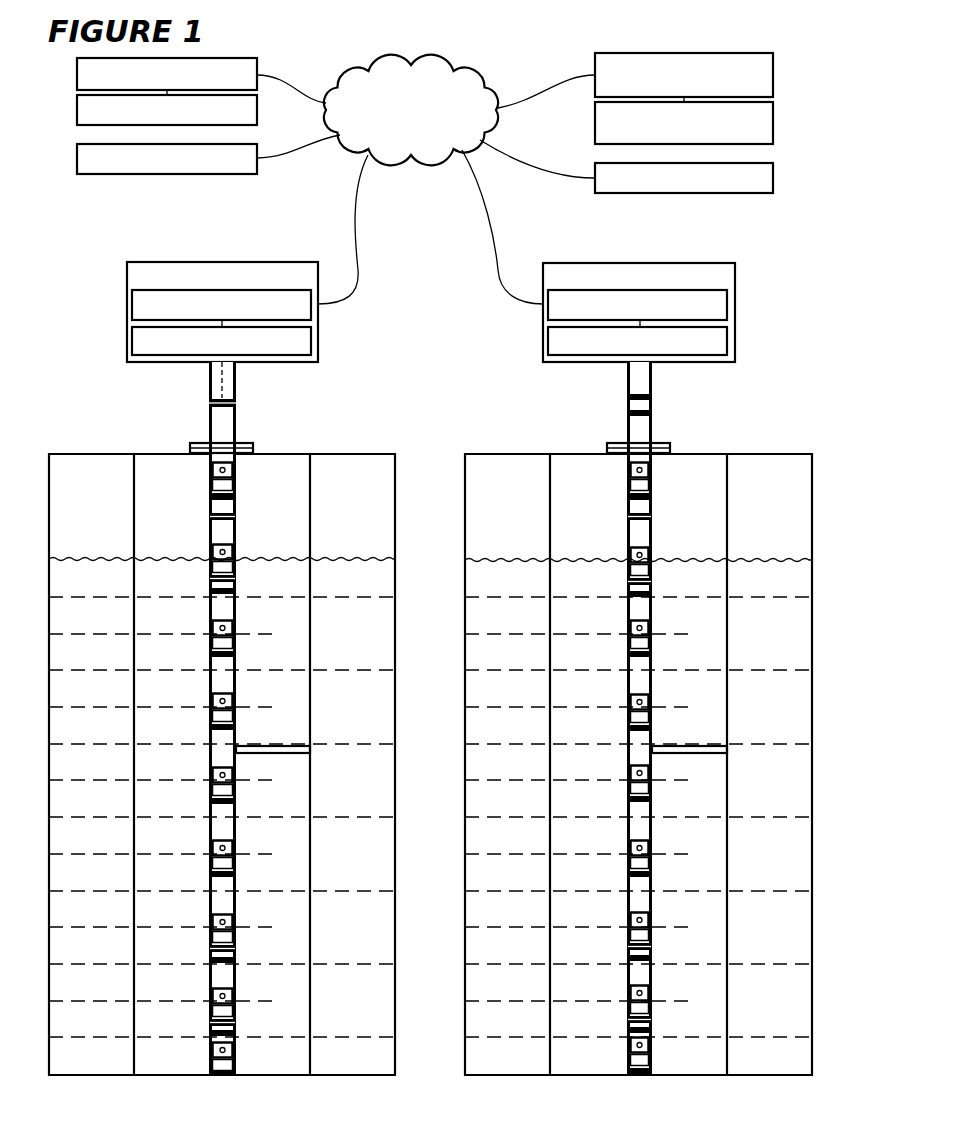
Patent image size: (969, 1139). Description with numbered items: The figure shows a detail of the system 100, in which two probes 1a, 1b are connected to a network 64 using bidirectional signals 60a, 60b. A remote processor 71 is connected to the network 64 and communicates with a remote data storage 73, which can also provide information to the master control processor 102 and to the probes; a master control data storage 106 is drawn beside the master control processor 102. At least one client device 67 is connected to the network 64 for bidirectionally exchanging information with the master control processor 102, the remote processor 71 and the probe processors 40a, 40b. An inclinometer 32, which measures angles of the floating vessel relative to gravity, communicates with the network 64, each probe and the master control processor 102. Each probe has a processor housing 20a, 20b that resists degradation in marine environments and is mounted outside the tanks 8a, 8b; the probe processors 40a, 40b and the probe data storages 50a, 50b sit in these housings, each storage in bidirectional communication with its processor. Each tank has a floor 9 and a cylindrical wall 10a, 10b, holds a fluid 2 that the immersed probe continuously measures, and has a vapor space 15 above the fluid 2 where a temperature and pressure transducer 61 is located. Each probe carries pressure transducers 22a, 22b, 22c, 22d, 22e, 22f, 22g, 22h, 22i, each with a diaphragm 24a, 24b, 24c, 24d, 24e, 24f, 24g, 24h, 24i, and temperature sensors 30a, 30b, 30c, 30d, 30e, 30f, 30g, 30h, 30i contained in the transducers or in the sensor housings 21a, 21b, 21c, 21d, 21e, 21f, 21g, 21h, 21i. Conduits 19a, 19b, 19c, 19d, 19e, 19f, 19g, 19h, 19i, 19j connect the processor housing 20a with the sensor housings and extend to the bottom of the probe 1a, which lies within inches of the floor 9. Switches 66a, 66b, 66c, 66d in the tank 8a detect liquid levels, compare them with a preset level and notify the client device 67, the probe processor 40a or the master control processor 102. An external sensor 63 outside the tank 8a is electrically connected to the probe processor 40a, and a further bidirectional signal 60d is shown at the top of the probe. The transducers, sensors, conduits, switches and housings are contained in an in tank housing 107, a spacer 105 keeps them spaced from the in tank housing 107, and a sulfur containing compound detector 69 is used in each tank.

The system 100 is at (752, 30).
The remote processor 71 is at (77, 78).
The remote data storage 73 is at (77, 113).
The client device 67 is at (77, 162).
The network 64 is at (474, 78).
The master control processor 102 is at (773, 81).
The master control data storage 106 is at (773, 127).
The inclinometer 32 is at (773, 185).
The bidirectional signal 60a is at (350, 193).
The bidirectional signal 60b is at (495, 215).
The bidirectional signal 60d is at (214, 378).
The probe 1a is at (251, 646).
The probe 1b is at (610, 644).
The processor housing 20a is at (126, 279).
The processor housing 20b is at (731, 281).
The probe processor 40a is at (126, 308).
The probe processor 40b is at (731, 310).
The probe data storage 50a is at (126, 342).
The probe data storage 50b is at (731, 344).
The tank 8a is at (292, 720).
The tank 8b is at (470, 424).
The wall 10a is at (393, 482).
The wall 10b is at (468, 498).
The conduit 19a is at (236, 378).
The conduit 19b is at (236, 435).
The conduit 19c is at (237, 539).
The conduit 19d is at (236, 608).
The conduit 19e is at (236, 672).
The conduit 19f is at (236, 746).
The conduit 19g is at (236, 819).
The probe segment 19h is at (236, 893).
The probe segment 19i is at (236, 967).
The probe segment 19j is at (237, 1036).
The external sensor 63 is at (209, 411).
The temperature and pressure transducer 61 is at (209, 500).
The switch 66a is at (210, 517).
The switch 66b is at (210, 585).
The switch 66c is at (210, 1026).
The switch 66d is at (210, 953).
The pressure transducer 22a is at (210, 473).
The pressure transducer 22b is at (210, 555).
The pressure transducer 22c is at (210, 631).
The pressure transducer 22d is at (210, 704).
The pressure transducer 22e is at (210, 778).
The pressure transducer 22f is at (210, 851).
The pressure transducer 22g is at (210, 925).
The pressure transducer 22h is at (210, 999).
The pressure transducer 22i is at (211, 1052).
The diaphragm 24a is at (233, 465).
The diaphragm 24b is at (233, 547).
The diaphragm 24c is at (233, 623).
The diaphragm 24d is at (233, 696).
The diaphragm 24e is at (233, 770).
The diaphragm 24f is at (233, 843).
The diaphragm 24g is at (233, 917).
The diaphragm 24h is at (233, 991).
The diaphragm 24i is at (231, 1047).
The sensor housing 21a is at (236, 482).
The sensor housing 21b is at (236, 566).
The sensor housing 21c is at (236, 641).
The sensor housing 21d is at (236, 714).
The sensor housing 21e is at (236, 788).
The sensor housing 21f is at (236, 861).
The sensor housing 21g is at (236, 934).
The sensor housing 21h is at (236, 1008).
The sensor housing 21i is at (237, 1052).
The temperature sensor 30a is at (212, 486).
The temperature sensor 30b is at (212, 569).
The temperature sensor 30c is at (212, 644).
The temperature sensor 30d is at (212, 717).
The temperature sensor 30e is at (212, 791).
The temperature sensor 30f is at (212, 864).
The temperature sensor 30g is at (212, 937).
The temperature sensor 30h is at (212, 1011).
The temperature sensor 30i is at (211, 1065).
The vapor space 15 is at (355, 505).
The fluid 2 is at (378, 559).
The in tank housing 107 is at (314, 628).
The spacer 105 is at (292, 755).
The floor 9 is at (92, 1076).
The sulfur containing compound detector 69 is at (236, 1072).